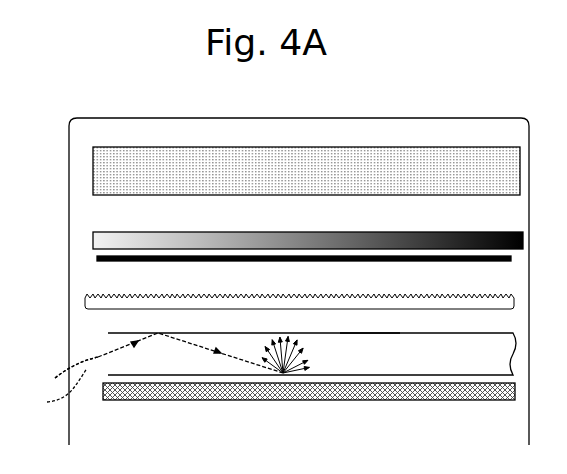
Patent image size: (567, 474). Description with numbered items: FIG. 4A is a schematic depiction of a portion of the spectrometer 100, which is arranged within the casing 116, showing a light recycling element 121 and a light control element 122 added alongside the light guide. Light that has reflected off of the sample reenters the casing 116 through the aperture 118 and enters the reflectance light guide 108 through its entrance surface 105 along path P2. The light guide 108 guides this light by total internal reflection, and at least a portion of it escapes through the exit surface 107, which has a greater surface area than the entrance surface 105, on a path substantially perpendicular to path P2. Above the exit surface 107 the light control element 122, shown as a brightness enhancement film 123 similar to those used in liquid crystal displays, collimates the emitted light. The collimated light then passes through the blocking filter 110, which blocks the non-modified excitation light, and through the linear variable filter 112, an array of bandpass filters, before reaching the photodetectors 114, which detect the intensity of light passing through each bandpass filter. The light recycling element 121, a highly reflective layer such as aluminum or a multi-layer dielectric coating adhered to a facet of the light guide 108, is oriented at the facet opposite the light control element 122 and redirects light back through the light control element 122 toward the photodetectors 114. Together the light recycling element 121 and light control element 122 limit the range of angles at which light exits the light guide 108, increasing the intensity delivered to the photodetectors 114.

The spectrometer 100 is at (299, 265).
The entrance surface 105 is at (90, 349).
The exit surface 107 is at (365, 333).
The reflectance light guide 108 is at (247, 345).
The blocking filter 110 is at (290, 261).
The linear variable filter 112 is at (177, 232).
The photodetectors 114 is at (306, 147).
The casing 116 is at (191, 117).
The aperture 118 is at (68, 357).
The light recycling element 121 is at (370, 401).
The light control element 122 is at (272, 281).
The brightness enhancement film 123 is at (190, 297).
The path P2 is at (57, 389).